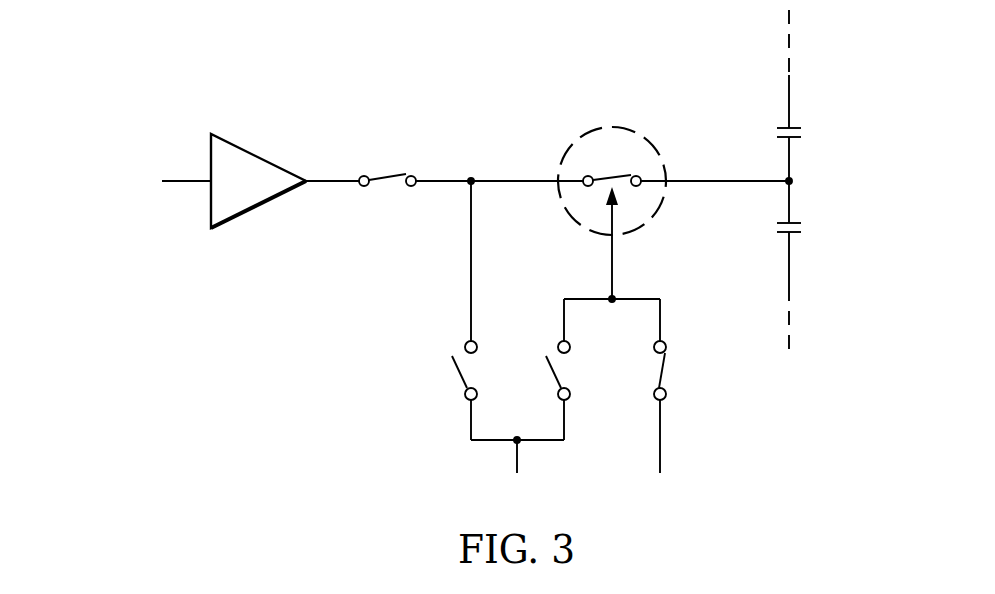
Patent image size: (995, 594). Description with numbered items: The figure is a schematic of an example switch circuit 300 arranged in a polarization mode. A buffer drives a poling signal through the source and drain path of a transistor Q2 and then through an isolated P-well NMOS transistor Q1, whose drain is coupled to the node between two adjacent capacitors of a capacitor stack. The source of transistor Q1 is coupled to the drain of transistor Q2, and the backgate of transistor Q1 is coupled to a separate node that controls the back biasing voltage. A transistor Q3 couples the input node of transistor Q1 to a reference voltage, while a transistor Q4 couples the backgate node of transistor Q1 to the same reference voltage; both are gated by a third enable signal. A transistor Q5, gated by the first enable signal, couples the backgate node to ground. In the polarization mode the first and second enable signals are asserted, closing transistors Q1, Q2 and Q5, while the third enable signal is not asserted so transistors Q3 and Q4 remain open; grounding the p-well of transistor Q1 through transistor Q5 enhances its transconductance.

The switch circuit 300 is at (322, 66).
The transistor Q1 is at (611, 166).
The transistor Q2 is at (387, 165).
The transistor Q3 is at (446, 370).
The transistor Q4 is at (540, 370).
The transistor Q5 is at (678, 370).